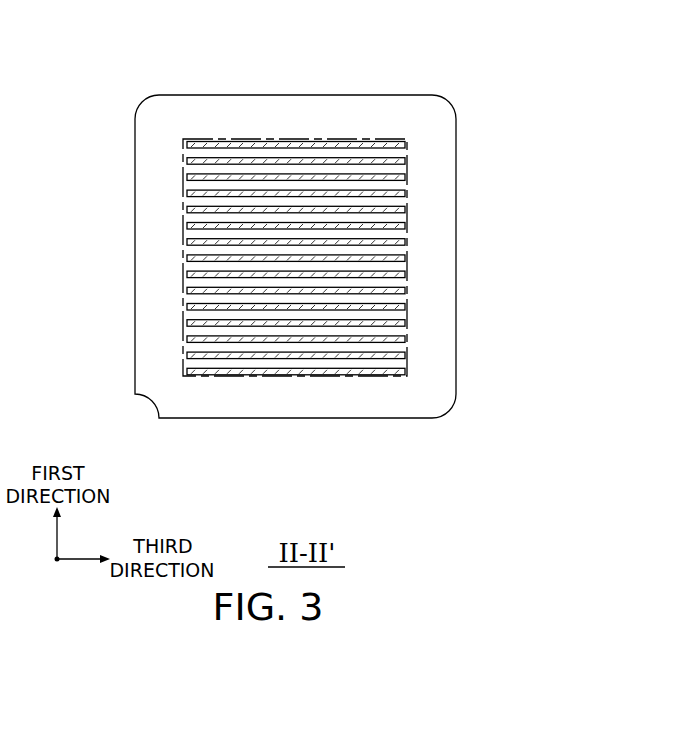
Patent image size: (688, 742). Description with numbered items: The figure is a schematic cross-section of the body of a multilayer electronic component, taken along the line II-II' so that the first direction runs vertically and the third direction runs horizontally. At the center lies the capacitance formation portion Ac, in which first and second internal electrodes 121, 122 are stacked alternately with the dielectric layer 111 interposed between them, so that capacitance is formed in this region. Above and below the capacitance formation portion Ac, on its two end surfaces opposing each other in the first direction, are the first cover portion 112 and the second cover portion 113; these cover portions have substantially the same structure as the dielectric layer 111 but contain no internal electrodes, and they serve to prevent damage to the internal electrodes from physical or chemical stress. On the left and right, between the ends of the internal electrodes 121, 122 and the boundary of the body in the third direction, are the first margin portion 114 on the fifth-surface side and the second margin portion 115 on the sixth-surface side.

The dielectric layer 111 is at (309, 199).
The first cover portion 112 is at (288, 110).
The second cover portion 113 is at (280, 412).
The first margin portion 114 is at (147, 236).
The second margin portion 115 is at (447, 237).
The first internal electrode 121 is at (360, 142).
The second internal electrode 122 is at (378, 160).
The capacitance formation portion Ac is at (420, 318).